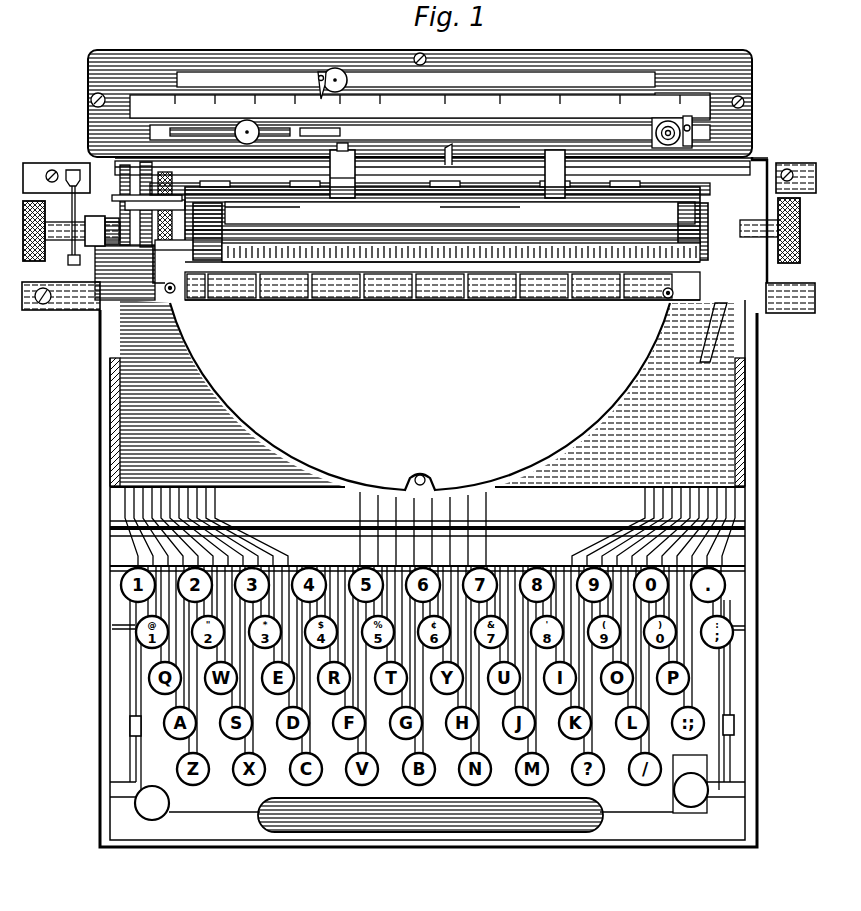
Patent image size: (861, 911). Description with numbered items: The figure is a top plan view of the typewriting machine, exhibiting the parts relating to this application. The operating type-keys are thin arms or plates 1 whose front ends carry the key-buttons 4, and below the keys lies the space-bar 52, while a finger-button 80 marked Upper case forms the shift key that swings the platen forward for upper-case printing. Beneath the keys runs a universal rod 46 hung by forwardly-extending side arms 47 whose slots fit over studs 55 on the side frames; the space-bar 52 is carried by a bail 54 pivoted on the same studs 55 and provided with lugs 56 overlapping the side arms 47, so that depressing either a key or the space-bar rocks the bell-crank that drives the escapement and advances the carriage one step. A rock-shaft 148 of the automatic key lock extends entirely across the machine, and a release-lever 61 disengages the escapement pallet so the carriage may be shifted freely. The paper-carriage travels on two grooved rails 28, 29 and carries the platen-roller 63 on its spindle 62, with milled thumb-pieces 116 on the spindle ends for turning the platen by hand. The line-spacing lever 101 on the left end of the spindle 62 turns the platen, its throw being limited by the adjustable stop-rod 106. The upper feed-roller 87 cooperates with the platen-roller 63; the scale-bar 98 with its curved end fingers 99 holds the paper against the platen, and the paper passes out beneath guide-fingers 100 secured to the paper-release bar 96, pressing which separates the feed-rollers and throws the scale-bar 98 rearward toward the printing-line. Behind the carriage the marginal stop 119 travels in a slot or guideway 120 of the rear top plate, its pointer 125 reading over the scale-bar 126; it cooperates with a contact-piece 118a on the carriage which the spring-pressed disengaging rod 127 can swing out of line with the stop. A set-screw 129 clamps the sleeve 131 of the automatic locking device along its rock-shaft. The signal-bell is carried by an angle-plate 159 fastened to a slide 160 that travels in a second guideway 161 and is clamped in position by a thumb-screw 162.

The type-key plates 1 is at (272, 522).
The key-buttons 4 is at (232, 782).
The grooved rail 28 is at (808, 313).
The grooved rail 29 is at (35, 168).
The universal rod 46 is at (722, 578).
The side arms 47 is at (130, 677).
The space-bar 52 is at (456, 818).
The bail 54 is at (140, 700).
The studs 55 is at (120, 626).
The lugs 56 is at (128, 726).
The release-lever 61 is at (72, 168).
The platen-roller spindle 62 is at (70, 262).
The platen-roller 63 is at (427, 218).
The finger-button 80 is at (136, 806).
The upper feed-roller 87 is at (514, 300).
The paper-release bar 96 is at (406, 178).
The scale-bar 98 is at (590, 256).
The curved fingers 99 is at (216, 226).
The guide-fingers 100 is at (543, 196).
The line-spacing lever 101 is at (122, 160).
The stop-rod 106 is at (342, 190).
The milled thumb-pieces 116 is at (36, 262).
The contact-piece 118a is at (455, 152).
The marginal stop 119 is at (670, 128).
The slot or guideway 120 is at (612, 130).
The pointer 125 is at (692, 120).
The scale-bar 126 is at (710, 100).
The disengaging rod 127 is at (141, 190).
The set-screw 129 is at (252, 128).
The sleeve 131 is at (306, 133).
The rock-shaft 148 is at (744, 522).
The angle-plate 159 is at (691, 808).
The slide 160 is at (350, 80).
The slot or guideway 161 is at (612, 77).
The thumb-screw 162 is at (339, 70).